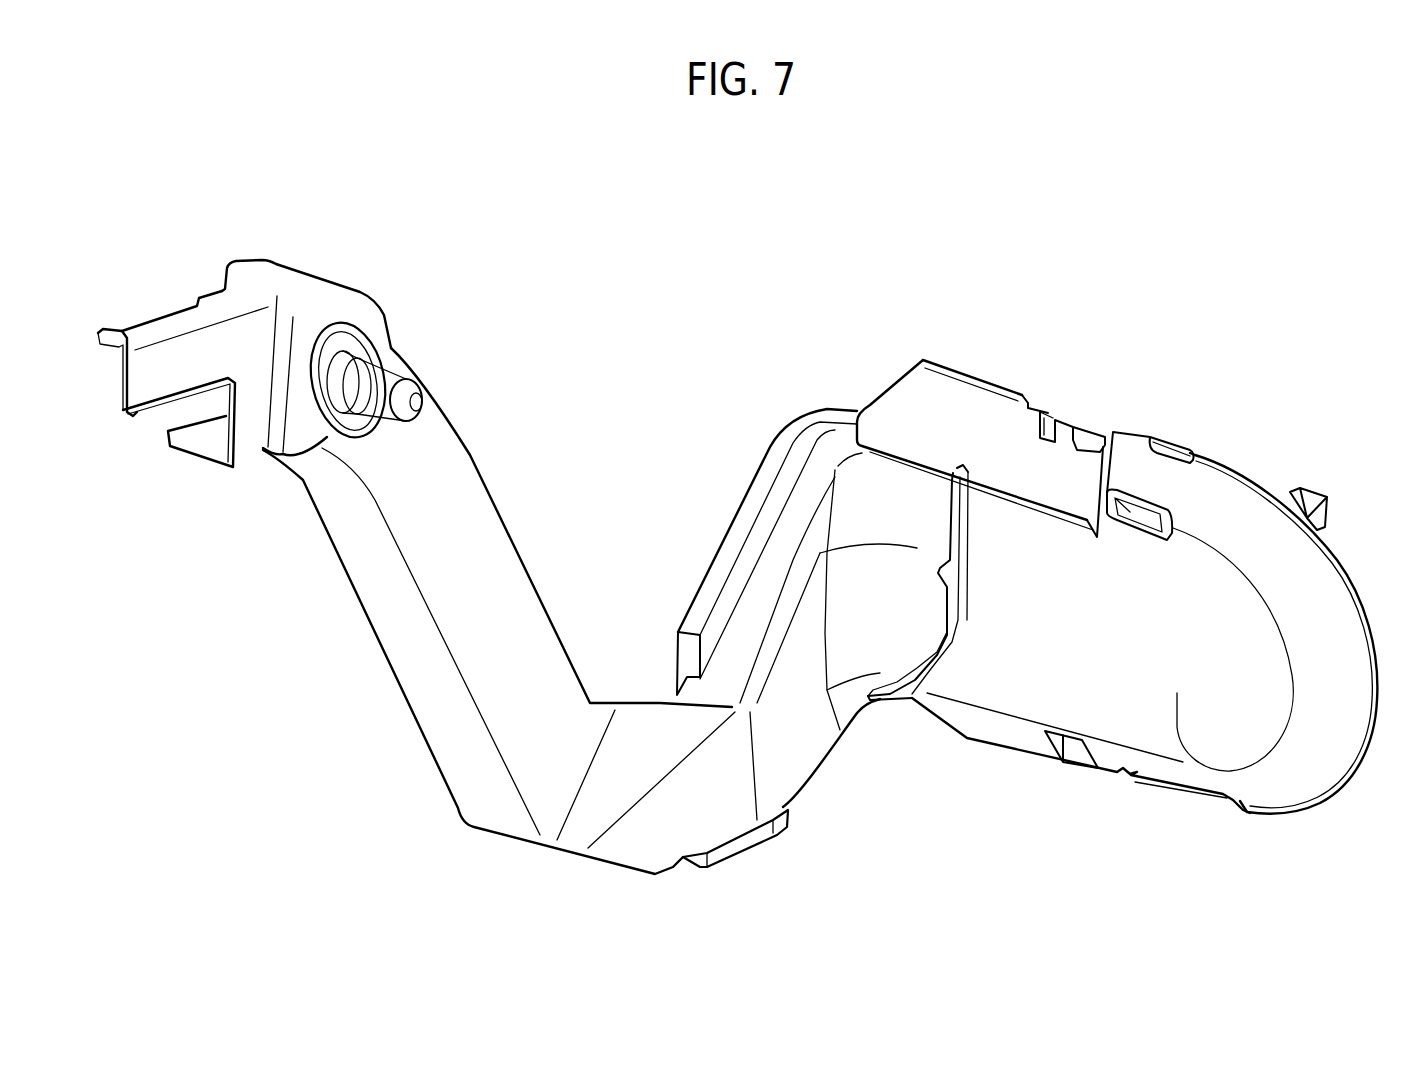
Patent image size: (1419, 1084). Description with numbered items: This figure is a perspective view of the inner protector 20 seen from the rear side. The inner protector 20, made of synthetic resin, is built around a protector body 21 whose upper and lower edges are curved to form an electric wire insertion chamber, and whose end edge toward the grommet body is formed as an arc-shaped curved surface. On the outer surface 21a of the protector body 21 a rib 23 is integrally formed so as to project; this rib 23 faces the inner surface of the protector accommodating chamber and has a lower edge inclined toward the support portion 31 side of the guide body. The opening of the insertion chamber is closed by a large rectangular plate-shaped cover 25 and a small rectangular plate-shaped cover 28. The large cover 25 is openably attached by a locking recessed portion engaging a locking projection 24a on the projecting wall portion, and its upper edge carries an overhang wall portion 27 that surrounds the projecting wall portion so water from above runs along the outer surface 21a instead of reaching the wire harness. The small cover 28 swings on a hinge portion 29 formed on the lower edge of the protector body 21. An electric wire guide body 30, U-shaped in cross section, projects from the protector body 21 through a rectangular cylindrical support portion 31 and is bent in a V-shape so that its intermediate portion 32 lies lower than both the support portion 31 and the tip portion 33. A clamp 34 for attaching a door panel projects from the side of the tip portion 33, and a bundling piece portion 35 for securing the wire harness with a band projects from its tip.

The inner protector 20 is at (668, 405).
The protector body 21 is at (1358, 585).
The outer surface 21a is at (1180, 705).
The rib 23 is at (963, 620).
The locking projection 24a is at (1075, 440).
The large rectangular plate-shaped cover 25 is at (985, 365).
The overhang wall portion 27 is at (938, 410).
The small rectangular plate-shaped cover 28 is at (1170, 435).
The hinge portion 29 is at (1148, 785).
The electric wire guide body 30 is at (503, 495).
The support portion 31 is at (812, 418).
The intermediate portion 32 is at (682, 862).
The tip portion 33 is at (258, 283).
The clamp 34 is at (393, 362).
The bundling piece portion 35 is at (172, 328).